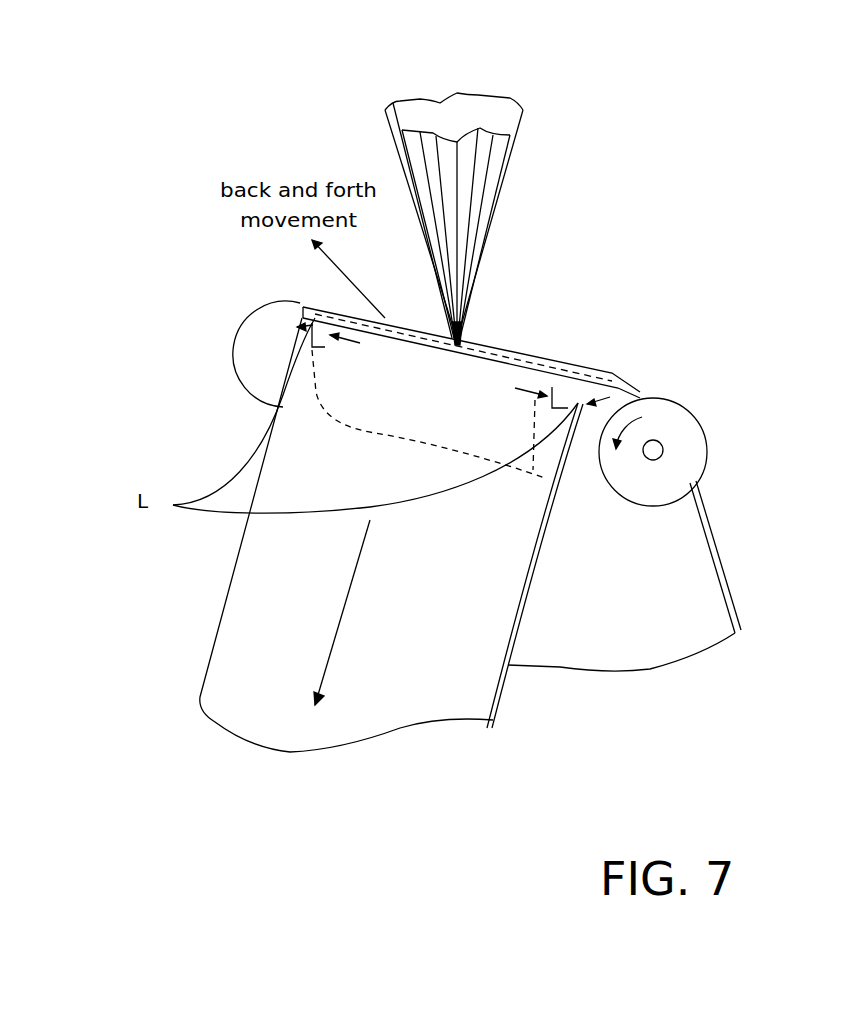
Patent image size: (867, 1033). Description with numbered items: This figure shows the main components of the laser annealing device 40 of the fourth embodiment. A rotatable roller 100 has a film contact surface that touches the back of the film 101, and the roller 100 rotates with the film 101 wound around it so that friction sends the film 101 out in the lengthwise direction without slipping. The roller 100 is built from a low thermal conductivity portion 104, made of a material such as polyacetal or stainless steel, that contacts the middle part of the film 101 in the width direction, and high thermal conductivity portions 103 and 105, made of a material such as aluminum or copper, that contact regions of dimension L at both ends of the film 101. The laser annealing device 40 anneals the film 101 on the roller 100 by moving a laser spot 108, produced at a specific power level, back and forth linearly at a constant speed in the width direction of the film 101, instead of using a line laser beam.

The laser annealing device 40 is at (738, 76).
The roller 100 is at (675, 428).
The film 101 is at (240, 680).
The high thermal conductivity portion 103 is at (265, 352).
The low thermal conductivity portion 104 is at (443, 390).
The high thermal conductivity portion 105 is at (580, 475).
The laser spot 108 is at (460, 217).